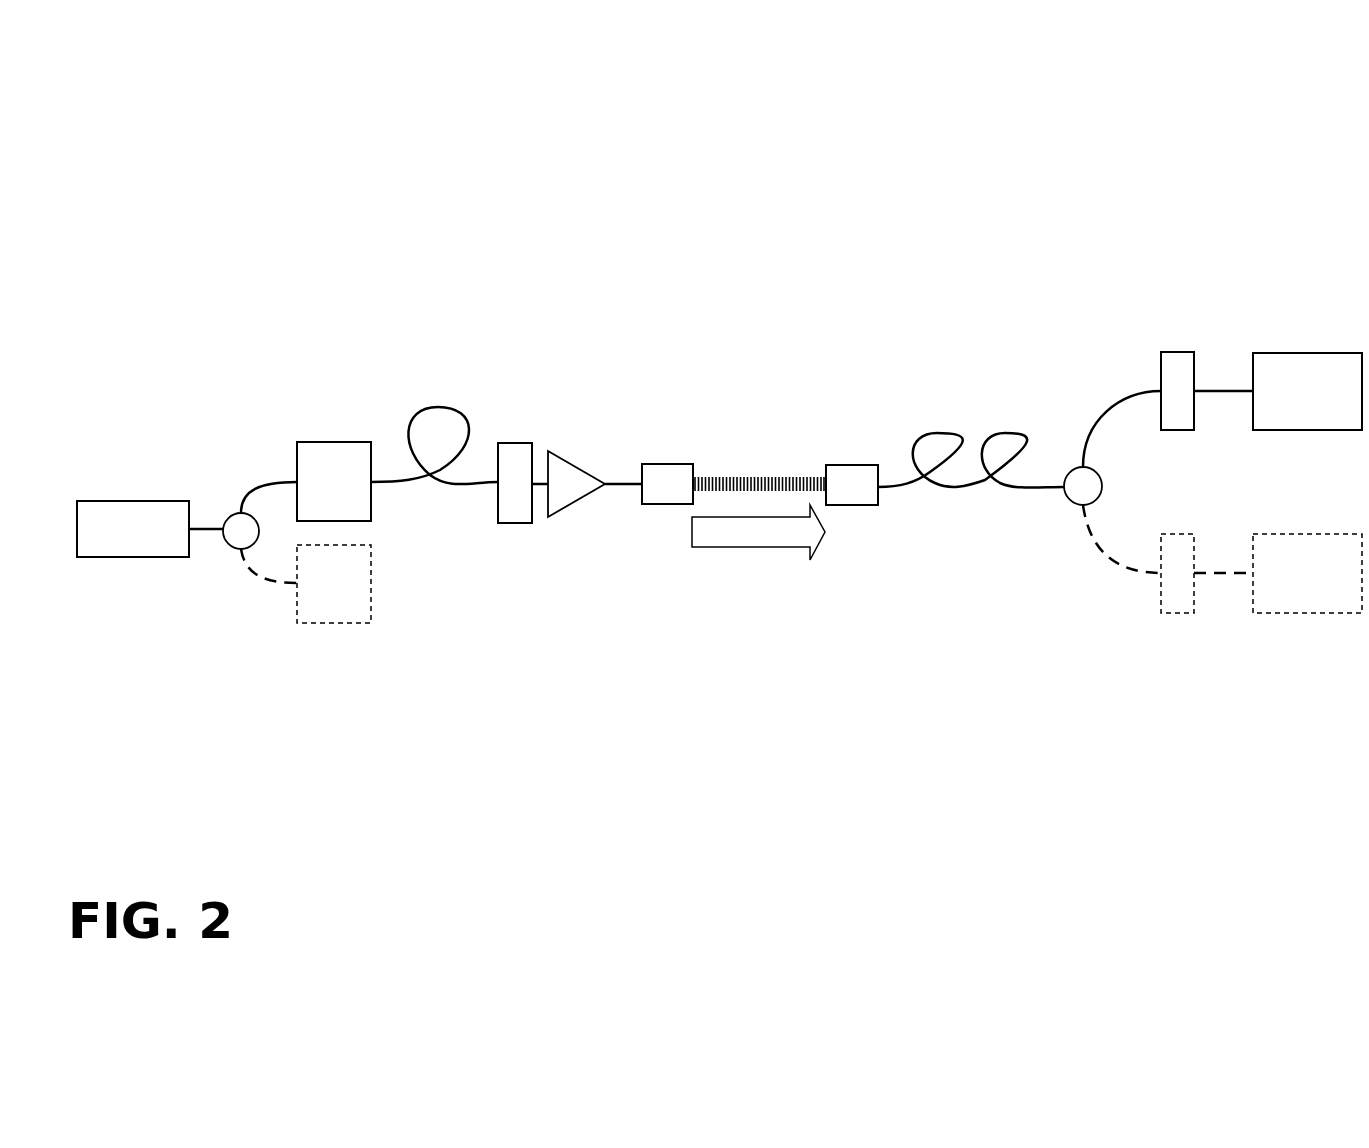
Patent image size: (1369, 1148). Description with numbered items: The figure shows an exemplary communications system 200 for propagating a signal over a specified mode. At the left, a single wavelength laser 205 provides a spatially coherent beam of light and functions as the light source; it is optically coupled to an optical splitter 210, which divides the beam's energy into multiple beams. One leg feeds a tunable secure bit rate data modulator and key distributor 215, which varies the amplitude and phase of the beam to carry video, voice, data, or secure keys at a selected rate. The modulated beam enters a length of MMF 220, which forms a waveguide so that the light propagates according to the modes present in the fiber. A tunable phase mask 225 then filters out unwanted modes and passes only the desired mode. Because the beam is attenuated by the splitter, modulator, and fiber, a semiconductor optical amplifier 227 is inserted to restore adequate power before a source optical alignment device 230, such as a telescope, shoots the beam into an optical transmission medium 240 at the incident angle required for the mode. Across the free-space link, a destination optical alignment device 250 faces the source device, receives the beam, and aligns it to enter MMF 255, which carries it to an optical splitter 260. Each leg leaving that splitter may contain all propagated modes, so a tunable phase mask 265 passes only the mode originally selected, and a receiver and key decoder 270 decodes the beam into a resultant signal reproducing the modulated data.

The communications system 200 is at (97, 142).
The single wavelength laser 205 is at (133, 498).
The optical splitter 210 is at (225, 563).
The tunable secure bit rate data modulator and key distributor 215 is at (318, 437).
The MMF 220 is at (460, 402).
The tunable phase mask 225 is at (518, 439).
The semiconductor optical amplifier 227 is at (575, 504).
The source optical alignment device 230 is at (667, 462).
The optical transmission medium 240 is at (762, 467).
The destination optical alignment device 250 is at (853, 463).
The MMF 255 is at (1001, 423).
The optical splitter 260 is at (1064, 509).
The tunable phase mask 265 is at (1180, 345).
The receiver and key decoder 270 is at (1308, 351).